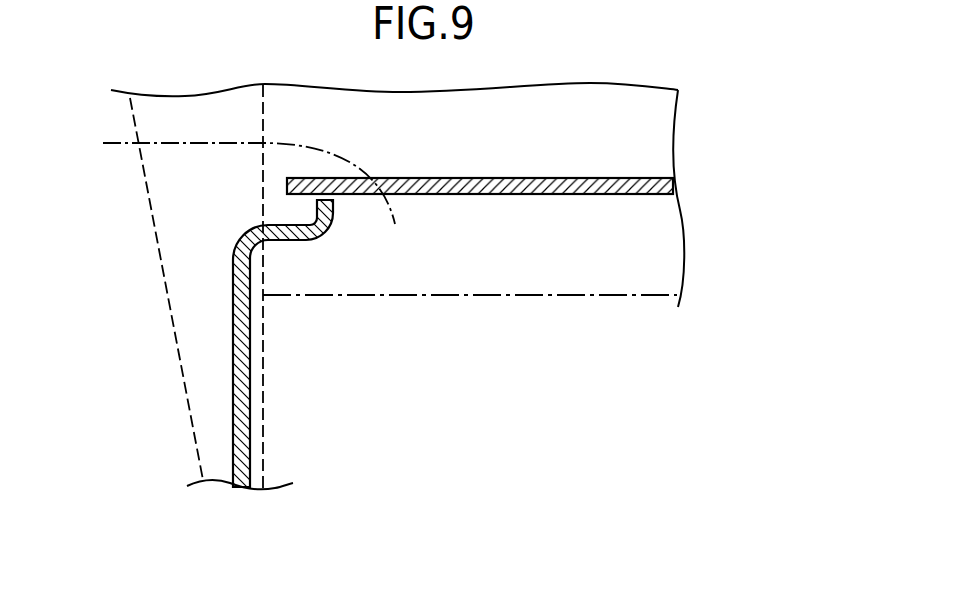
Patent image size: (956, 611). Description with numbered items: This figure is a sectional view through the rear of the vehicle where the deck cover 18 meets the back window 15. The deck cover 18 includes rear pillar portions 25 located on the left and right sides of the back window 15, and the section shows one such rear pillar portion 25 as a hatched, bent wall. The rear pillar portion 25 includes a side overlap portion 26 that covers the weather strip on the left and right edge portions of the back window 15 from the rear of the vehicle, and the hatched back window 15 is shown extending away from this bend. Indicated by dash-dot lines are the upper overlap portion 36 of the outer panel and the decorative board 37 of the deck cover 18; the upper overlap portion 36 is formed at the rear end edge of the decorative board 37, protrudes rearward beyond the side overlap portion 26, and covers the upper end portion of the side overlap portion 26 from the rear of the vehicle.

The back window 15 is at (568, 178).
The deck cover 18 is at (166, 278).
The rear pillar portion 25 is at (250, 428).
The side overlap portion 26 is at (297, 241).
The upper overlap portion 36 is at (524, 295).
The decorative board 37 is at (226, 174).